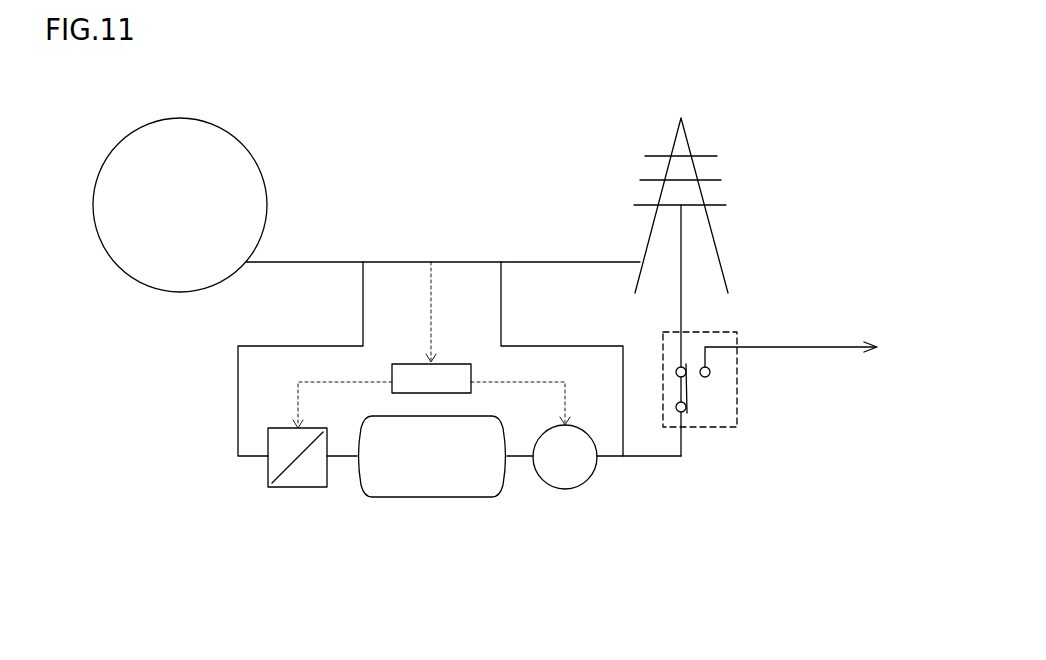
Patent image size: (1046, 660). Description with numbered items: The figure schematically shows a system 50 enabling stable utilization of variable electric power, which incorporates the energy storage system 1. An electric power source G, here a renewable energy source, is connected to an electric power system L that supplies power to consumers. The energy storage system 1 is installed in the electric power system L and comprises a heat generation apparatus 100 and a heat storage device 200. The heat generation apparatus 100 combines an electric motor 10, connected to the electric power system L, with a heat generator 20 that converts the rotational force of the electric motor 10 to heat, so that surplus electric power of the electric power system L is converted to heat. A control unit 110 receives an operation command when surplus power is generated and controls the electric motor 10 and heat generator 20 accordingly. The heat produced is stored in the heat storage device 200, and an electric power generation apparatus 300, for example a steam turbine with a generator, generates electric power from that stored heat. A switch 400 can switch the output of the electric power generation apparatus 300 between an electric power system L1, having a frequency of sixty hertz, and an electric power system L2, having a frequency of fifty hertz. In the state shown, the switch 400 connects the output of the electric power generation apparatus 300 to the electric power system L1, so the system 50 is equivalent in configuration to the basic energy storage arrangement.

The energy storage system 1 is at (318, 553).
The electric power source G is at (131, 134).
The electric power system L is at (573, 261).
The system enabling stable utilization of variable electric power 50 is at (807, 158).
The electric power system L1 is at (683, 297).
The electric power system L2 is at (775, 347).
The switch 400 is at (719, 428).
The control unit 110 is at (452, 362).
The heat generation apparatus 100 is at (276, 493).
The electric motor 10 is at (284, 446).
The heat generator 20 is at (310, 473).
The heat storage device 200 is at (430, 478).
The electric power generation apparatus 300 is at (575, 472).